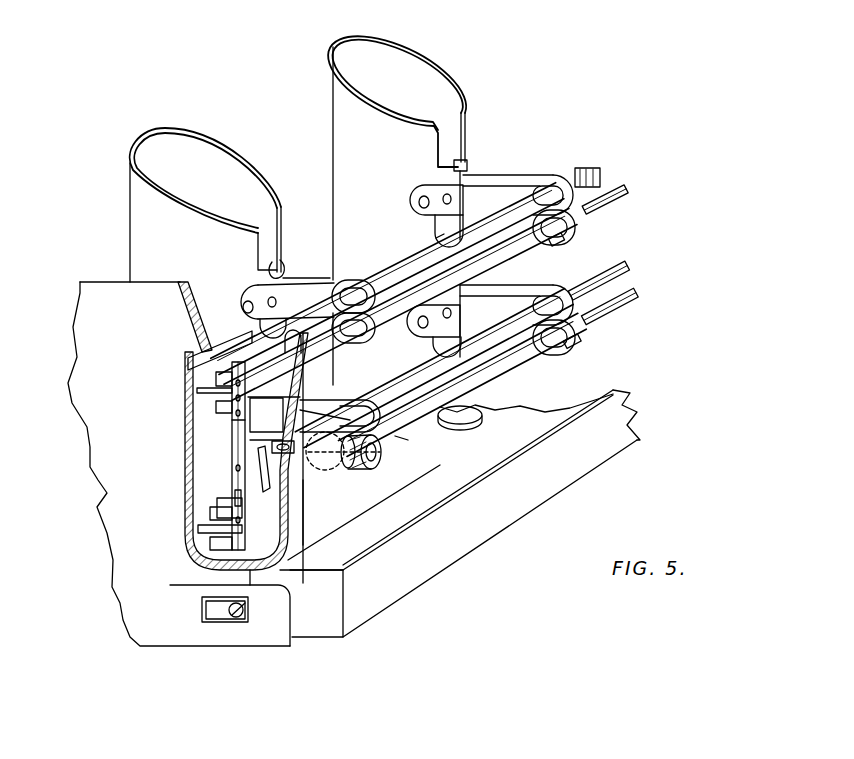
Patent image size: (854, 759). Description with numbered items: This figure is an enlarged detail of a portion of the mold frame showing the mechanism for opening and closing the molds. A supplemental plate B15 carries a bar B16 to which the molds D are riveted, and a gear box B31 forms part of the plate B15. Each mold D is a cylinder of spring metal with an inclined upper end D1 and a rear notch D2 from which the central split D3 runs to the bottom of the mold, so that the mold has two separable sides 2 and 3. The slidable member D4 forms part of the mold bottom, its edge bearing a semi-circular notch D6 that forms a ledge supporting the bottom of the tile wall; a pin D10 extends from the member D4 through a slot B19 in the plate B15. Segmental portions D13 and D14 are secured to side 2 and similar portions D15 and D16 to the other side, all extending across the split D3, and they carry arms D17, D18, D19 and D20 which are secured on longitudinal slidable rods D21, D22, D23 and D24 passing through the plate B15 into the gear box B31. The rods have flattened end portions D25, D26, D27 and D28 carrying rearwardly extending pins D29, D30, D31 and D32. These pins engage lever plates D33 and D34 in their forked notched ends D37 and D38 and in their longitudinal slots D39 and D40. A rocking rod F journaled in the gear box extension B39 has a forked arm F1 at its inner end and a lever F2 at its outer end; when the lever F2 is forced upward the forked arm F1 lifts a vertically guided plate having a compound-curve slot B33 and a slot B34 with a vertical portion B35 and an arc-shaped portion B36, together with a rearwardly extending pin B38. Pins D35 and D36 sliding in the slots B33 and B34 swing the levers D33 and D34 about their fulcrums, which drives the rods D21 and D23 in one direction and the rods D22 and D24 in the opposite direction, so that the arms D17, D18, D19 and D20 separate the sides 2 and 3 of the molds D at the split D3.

The supplemental plate B15 is at (179, 464).
The mold D is at (477, 98).
The inclined upper end D1 is at (155, 128).
The rear notch D2 is at (283, 235).
The central split D3 is at (280, 268).
The side of the mold 3 is at (468, 164).
The side of the mold 2 is at (420, 241).
The segmental portion D15 is at (441, 236).
The longitudinal slidable rod D21 is at (600, 170).
The longitudinal slidable rod D22 is at (608, 200).
The arm D18 is at (575, 229).
The arm D17 is at (530, 175).
The segmental portion D13 is at (414, 202).
The pin D32 is at (302, 332).
The segmental portion D16 is at (444, 347).
The segmental portion D14 is at (422, 333).
The arm D19 is at (552, 285).
The longitudinal slidable rod D23 is at (630, 259).
The longitudinal slidable rod D24 is at (623, 298).
The arm D20 is at (573, 338).
The notched end D37 is at (203, 355).
The gear box B31 is at (190, 575).
The lever plate D33 is at (232, 455).
The lever plate D34 is at (229, 497).
The pin D30 is at (232, 422).
The flattened end portion D25 is at (223, 384).
The pin D29 is at (220, 389).
The flattened end portion D26 is at (217, 404).
The flattened end portion D27 is at (212, 512).
The pin D31 is at (245, 532).
The flattened end portion D28 is at (243, 538).
The pin D36 is at (249, 431).
The vertical portion of slot B35 is at (250, 452).
The pin D35 is at (256, 482).
The forked arm F1 is at (275, 442).
The longitudinal slot D39 is at (289, 350).
The slot B33 is at (274, 398).
The slot B34 is at (348, 418).
The pin B38 is at (340, 416).
The lever F2 is at (408, 438).
The rocking rod F is at (382, 468).
The extension B39 is at (380, 458).
The arc-shaped portion of slot B36 is at (341, 483).
The longitudinal slot D40 is at (303, 500).
The notched end D38 is at (258, 536).
The bar B16 is at (290, 648).
The slot B19 is at (220, 623).
The pin D10 is at (240, 624).
The slidable member D4 is at (465, 513).
The semi-circular notch D6 is at (462, 410).